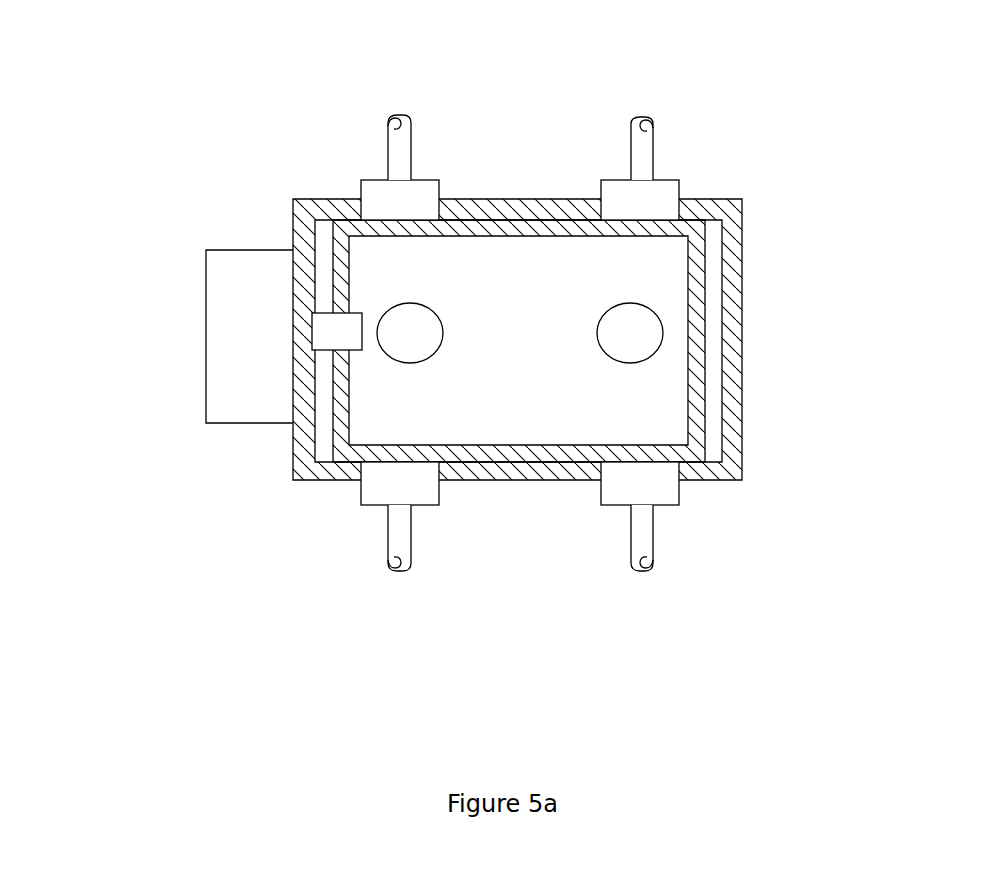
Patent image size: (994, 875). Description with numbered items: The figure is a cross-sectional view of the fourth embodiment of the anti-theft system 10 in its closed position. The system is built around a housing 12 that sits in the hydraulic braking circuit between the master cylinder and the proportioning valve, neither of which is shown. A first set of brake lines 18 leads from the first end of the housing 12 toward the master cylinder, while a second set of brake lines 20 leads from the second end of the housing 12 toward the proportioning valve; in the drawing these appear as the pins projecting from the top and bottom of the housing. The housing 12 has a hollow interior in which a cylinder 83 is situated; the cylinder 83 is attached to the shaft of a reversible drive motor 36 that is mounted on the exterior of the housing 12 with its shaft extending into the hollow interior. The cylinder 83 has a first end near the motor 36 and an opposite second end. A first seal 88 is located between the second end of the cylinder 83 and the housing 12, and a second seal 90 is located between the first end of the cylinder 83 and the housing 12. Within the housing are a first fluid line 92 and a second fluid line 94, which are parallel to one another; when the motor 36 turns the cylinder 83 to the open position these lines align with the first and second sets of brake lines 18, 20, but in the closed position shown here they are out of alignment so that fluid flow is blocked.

The anti-theft system 10 is at (200, 108).
The housing 12 is at (742, 211).
The first set of brake lines 18 is at (641, 152).
The second set of brake lines 20 is at (653, 523).
The reversible drive motor 36 is at (248, 275).
The cylinder 83 is at (342, 460).
The first seal 88 is at (713, 376).
The second seal 90 is at (328, 407).
The first fluid line 92 is at (624, 363).
The second fluid line 94 is at (420, 363).